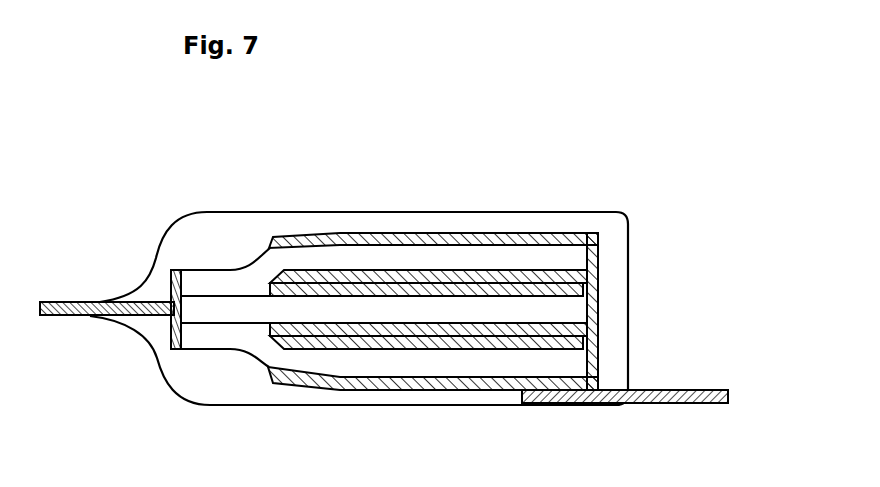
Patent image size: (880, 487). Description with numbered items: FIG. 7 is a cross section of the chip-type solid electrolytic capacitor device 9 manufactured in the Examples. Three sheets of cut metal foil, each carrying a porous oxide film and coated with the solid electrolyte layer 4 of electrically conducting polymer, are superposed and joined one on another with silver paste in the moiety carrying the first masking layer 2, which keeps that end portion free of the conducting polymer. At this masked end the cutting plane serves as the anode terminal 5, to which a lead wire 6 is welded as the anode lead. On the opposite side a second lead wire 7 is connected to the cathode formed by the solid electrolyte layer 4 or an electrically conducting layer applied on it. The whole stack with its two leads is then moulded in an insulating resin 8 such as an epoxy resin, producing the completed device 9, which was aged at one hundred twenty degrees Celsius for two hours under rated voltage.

The first masking layer 2 is at (311, 236).
The solid electrolyte layer 4 is at (472, 236).
The anode terminal 5 is at (172, 348).
The lead wire 6 is at (92, 317).
The lead wire 7 is at (672, 404).
The insulating resin 8 is at (616, 232).
The solid electrolytic capacitor device 9 is at (582, 212).